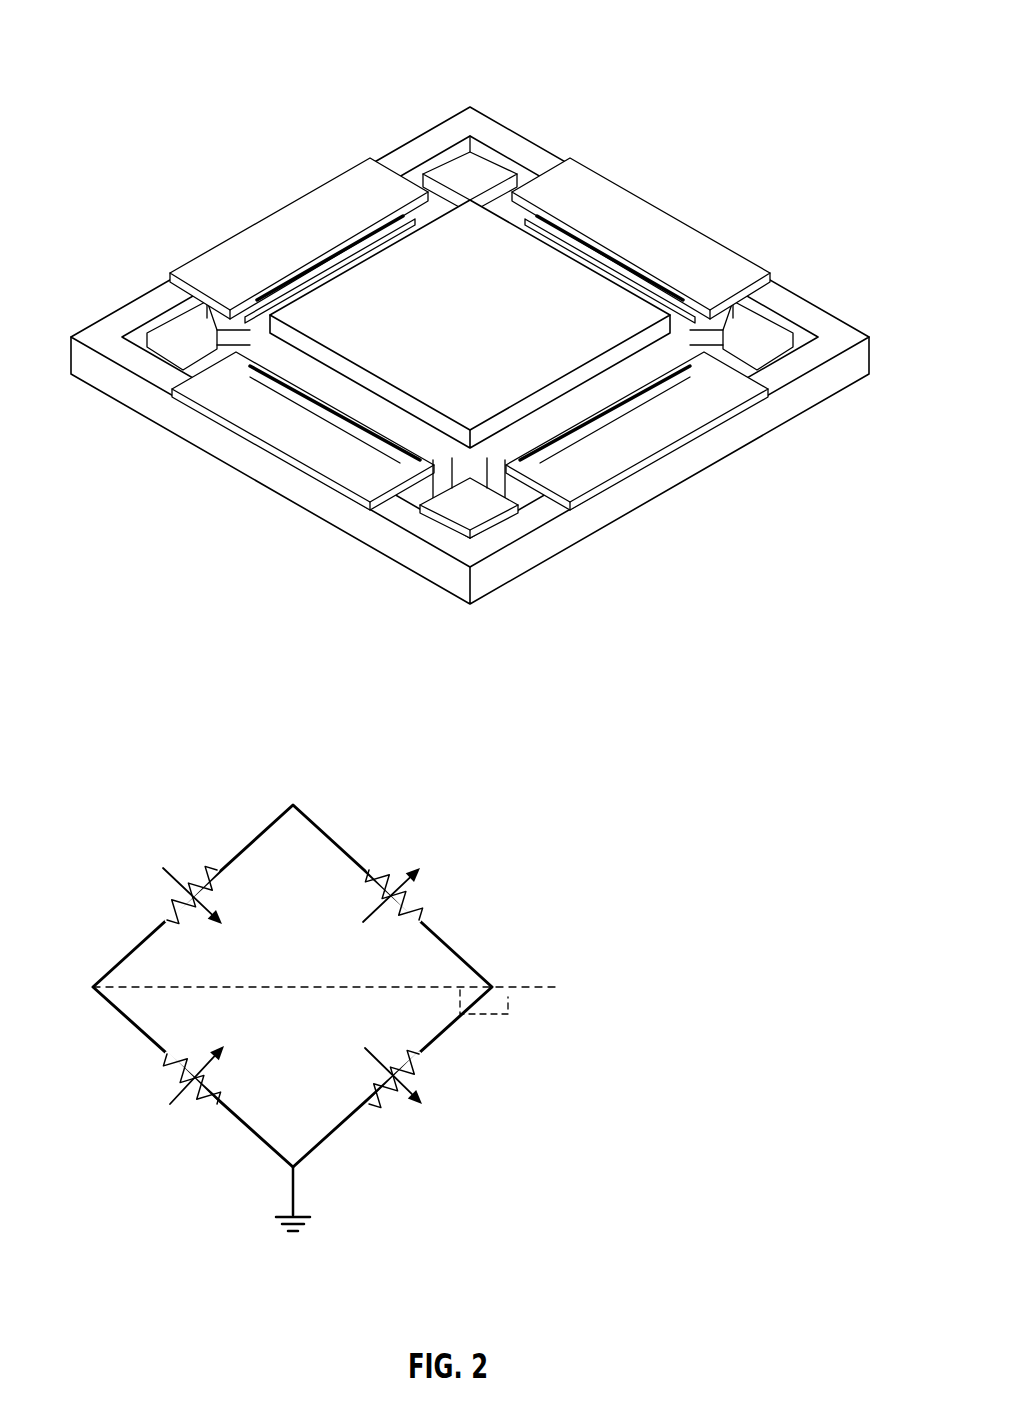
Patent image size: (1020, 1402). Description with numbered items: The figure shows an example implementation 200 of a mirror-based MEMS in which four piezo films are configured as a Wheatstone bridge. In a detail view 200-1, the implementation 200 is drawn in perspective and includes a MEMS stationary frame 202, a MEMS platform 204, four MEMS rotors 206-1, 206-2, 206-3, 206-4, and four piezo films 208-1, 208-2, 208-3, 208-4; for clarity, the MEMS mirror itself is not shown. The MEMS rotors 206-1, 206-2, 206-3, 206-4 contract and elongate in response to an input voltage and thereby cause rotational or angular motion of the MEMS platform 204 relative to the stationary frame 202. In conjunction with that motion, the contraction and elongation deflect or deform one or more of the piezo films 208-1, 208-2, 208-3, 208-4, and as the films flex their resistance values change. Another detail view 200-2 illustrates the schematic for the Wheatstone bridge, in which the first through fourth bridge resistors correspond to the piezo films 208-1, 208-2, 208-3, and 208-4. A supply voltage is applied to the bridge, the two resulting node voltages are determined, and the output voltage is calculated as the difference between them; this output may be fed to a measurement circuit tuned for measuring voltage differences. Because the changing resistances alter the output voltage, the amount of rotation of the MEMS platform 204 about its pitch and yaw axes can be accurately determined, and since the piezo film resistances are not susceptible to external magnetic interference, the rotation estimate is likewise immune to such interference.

The example implementation 200 is at (146, 39).
The detail view 200-1 is at (466, 346).
The detail view 200-2 is at (497, 1269).
The MEMS stationary frame 202 is at (472, 128).
The MEMS platform 204 is at (488, 498).
The MEMS rotor 206-1 is at (408, 223).
The MEMS rotor 206-2 is at (543, 233).
The MEMS rotor 206-3 is at (553, 437).
The MEMS rotor 206-4 is at (372, 425).
The piezo film 208-1 is at (270, 240).
The piezo film 208-2 is at (677, 263).
The piezo film 208-3 is at (672, 398).
The piezo film 208-4 is at (240, 385).